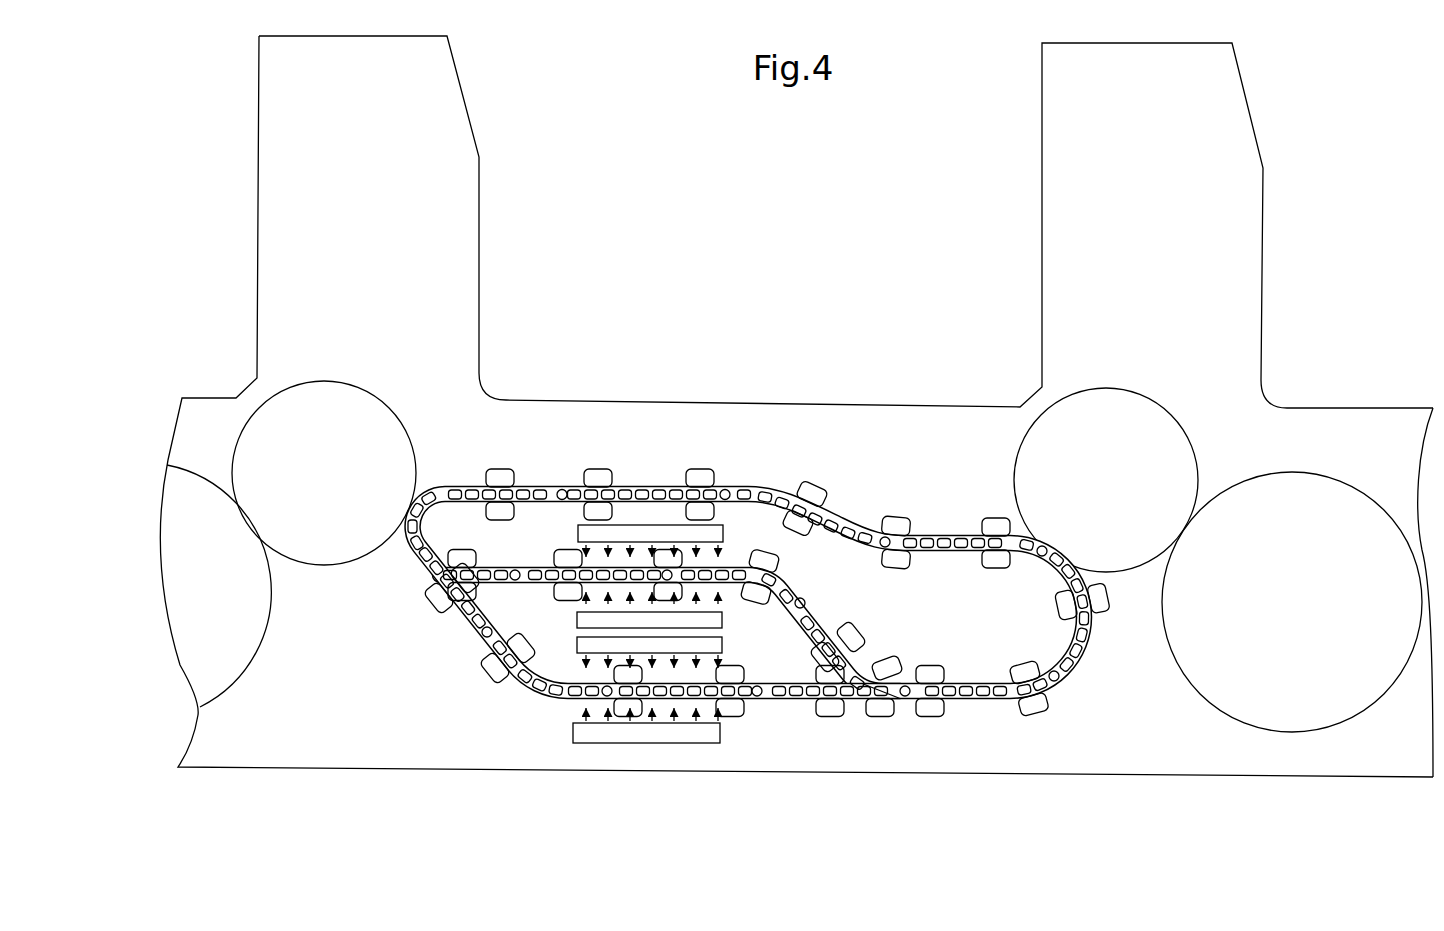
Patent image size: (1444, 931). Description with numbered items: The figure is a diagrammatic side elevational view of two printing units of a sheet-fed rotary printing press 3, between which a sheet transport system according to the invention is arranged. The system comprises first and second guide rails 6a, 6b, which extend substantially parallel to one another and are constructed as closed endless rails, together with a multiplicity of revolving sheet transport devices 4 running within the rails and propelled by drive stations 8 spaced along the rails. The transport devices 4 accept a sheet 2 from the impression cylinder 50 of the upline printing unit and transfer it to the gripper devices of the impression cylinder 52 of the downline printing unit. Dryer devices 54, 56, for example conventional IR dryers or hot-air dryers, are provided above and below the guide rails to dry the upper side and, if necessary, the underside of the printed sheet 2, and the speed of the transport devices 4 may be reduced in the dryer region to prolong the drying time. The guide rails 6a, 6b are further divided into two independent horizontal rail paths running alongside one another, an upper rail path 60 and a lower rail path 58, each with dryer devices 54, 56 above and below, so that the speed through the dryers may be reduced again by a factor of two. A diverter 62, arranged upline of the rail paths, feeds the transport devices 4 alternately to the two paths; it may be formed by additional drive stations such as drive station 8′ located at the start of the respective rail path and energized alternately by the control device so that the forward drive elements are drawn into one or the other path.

The sheet 2 is at (784, 580).
The printing press 3 is at (528, 398).
The sheet transport device 4 is at (850, 530).
The first guide rail 6a is at (575, 493).
The second guide rail 6b is at (707, 593).
The drive station 8 is at (703, 478).
The additional drive station 8′ is at (887, 668).
The impression cylinder 50 is at (1080, 470).
The impression cylinder 52 is at (320, 462).
The dryer device 54 is at (586, 735).
The dryer device 56 is at (715, 527).
The lower rail path 58 is at (740, 697).
The upper rail path 60 is at (838, 607).
The diverter 62 is at (897, 710).